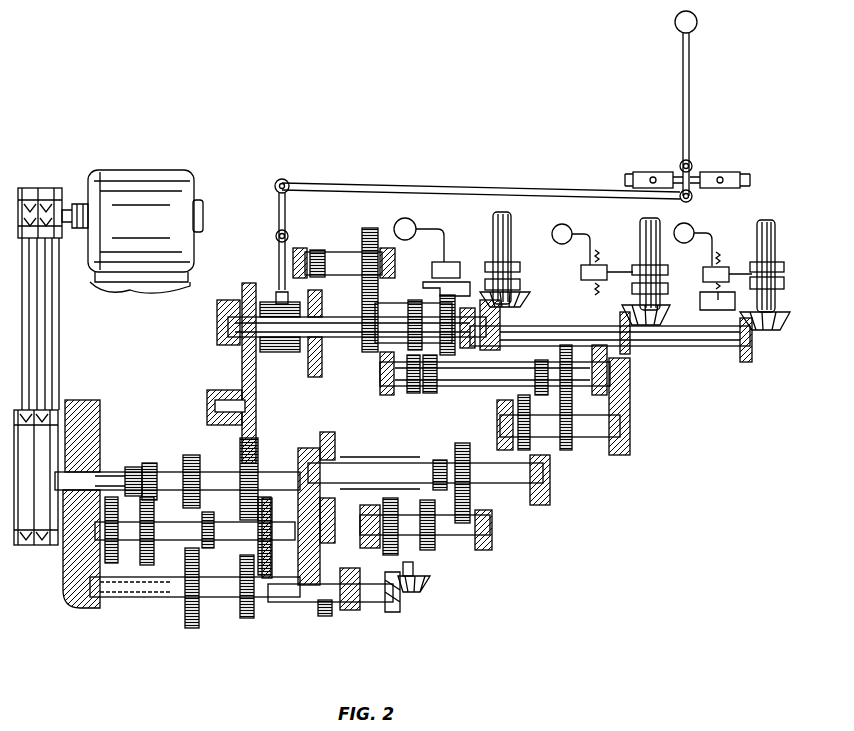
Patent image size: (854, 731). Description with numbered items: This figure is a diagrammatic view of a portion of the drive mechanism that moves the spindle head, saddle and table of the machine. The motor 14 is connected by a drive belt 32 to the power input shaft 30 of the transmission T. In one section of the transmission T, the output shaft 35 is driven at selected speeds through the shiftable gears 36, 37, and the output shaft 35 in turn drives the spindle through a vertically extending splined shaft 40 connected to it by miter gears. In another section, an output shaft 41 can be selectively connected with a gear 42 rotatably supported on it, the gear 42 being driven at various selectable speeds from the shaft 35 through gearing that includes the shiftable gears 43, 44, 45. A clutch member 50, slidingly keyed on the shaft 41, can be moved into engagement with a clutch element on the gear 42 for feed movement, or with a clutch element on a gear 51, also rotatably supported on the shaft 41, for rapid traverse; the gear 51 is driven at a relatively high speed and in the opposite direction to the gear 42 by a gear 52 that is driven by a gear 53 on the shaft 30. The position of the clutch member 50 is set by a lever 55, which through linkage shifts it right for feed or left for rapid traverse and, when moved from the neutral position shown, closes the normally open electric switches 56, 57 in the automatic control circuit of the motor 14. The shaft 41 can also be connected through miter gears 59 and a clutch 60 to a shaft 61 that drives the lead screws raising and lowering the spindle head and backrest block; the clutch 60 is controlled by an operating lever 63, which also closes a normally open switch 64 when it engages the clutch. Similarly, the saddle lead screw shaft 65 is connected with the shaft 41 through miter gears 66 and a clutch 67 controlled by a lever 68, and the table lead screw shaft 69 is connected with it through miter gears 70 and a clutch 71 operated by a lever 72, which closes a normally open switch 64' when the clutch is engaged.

The motor 14 is at (145, 178).
The drive belt 32 is at (58, 368).
The power input shaft 30 is at (95, 470).
The shiftable gear 36 is at (186, 460).
The transmission T is at (166, 606).
The shiftable gear 37 is at (196, 614).
The output shaft 35 is at (334, 610).
The vertically extending splined shaft 40 is at (420, 572).
The shiftable gear 43 is at (450, 464).
The shiftable gear 45 is at (430, 386).
The shiftable gear 44 is at (556, 366).
The gear 53 is at (258, 458).
The gear 52 is at (242, 385).
The gear 42 is at (316, 372).
The output shaft 41 is at (340, 340).
The gear 51 is at (240, 300).
The clutch member 50 is at (272, 300).
The lever 55 is at (683, 58).
The normally open electric switch 56 is at (730, 172).
The normally open electric switch 57 is at (651, 172).
The operating lever 63 is at (444, 250).
The normally opened switch 64 is at (437, 275).
The shaft 61 is at (510, 228).
The clutch 60 is at (522, 272).
The miter gears 59 is at (500, 340).
The lever 68 is at (572, 232).
The clutch 67 is at (628, 278).
The vertical shaft 65 is at (652, 230).
The miter gears 66 is at (648, 336).
The normally open switch 64' is at (698, 299).
The lever 72 is at (694, 233).
The clutch 71 is at (785, 302).
The shaft 69 is at (772, 230).
The miter gears 70 is at (755, 342).